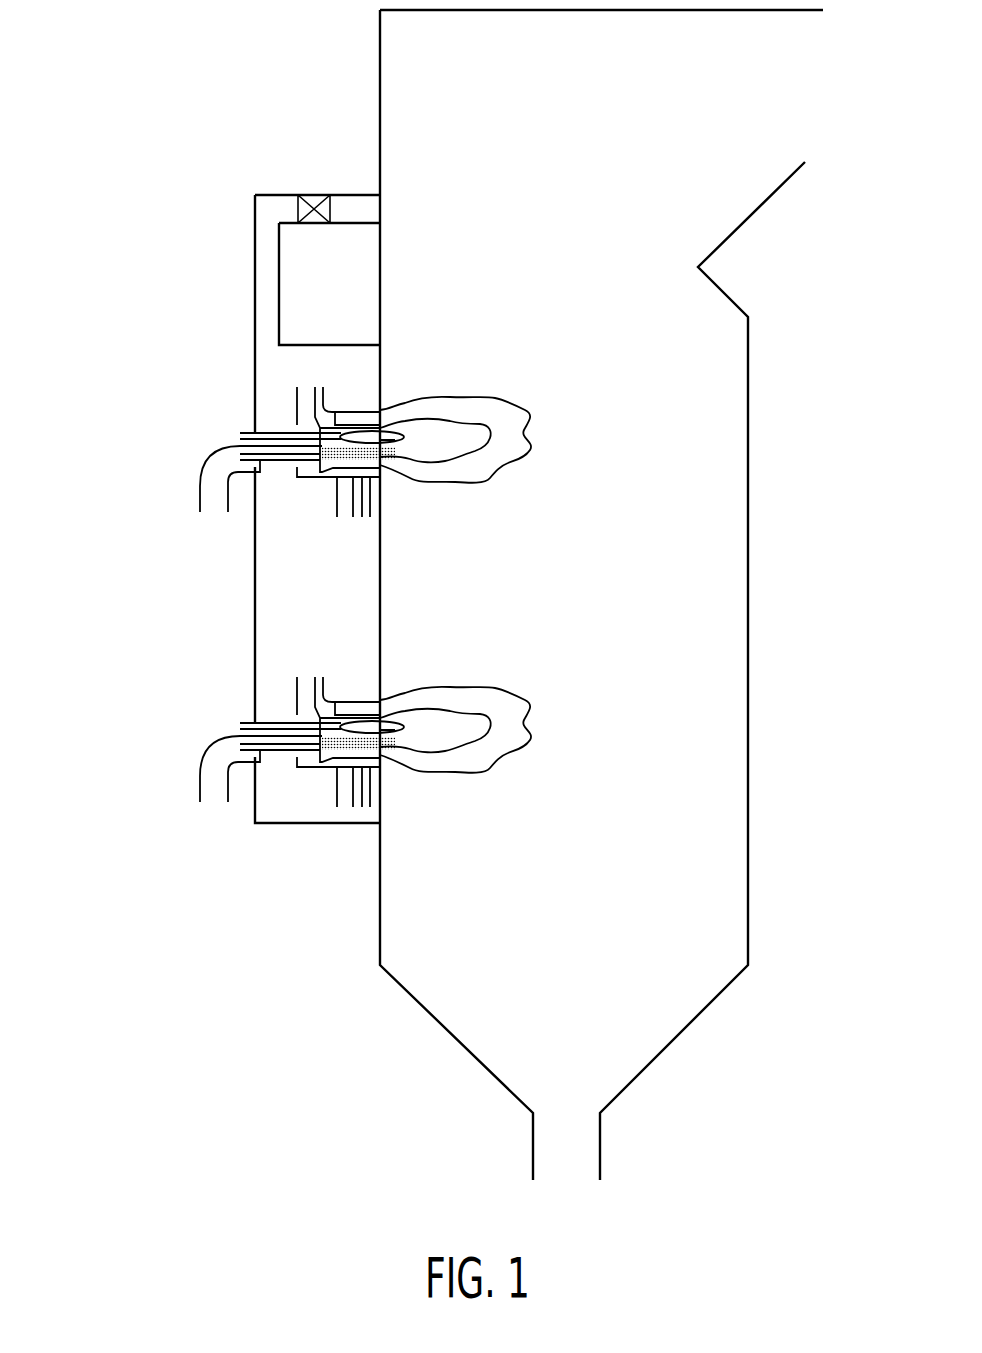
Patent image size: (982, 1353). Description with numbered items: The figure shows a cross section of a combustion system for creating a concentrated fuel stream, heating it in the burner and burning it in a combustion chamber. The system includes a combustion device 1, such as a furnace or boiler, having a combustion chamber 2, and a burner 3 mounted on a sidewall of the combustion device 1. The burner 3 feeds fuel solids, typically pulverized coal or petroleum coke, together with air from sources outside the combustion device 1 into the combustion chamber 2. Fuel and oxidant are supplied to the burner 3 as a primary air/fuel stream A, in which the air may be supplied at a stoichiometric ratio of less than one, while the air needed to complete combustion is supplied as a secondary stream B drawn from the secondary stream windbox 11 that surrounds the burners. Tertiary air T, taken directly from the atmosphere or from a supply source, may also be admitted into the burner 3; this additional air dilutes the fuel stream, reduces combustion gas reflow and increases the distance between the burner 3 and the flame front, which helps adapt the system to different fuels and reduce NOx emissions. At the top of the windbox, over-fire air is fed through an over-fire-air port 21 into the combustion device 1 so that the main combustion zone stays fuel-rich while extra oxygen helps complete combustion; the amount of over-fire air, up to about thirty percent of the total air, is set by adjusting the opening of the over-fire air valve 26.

The combustion device 1 is at (748, 395).
The combustion chamber 2 is at (565, 243).
The burner 3 is at (268, 427).
The secondary stream windbox 11 is at (310, 823).
The over-fire-air port 21 is at (362, 195).
The over-fire air valve 26 is at (327, 195).
The tertiary air T is at (232, 725).
The primary air/fuel stream A is at (213, 816).
The secondary stream B is at (281, 827).